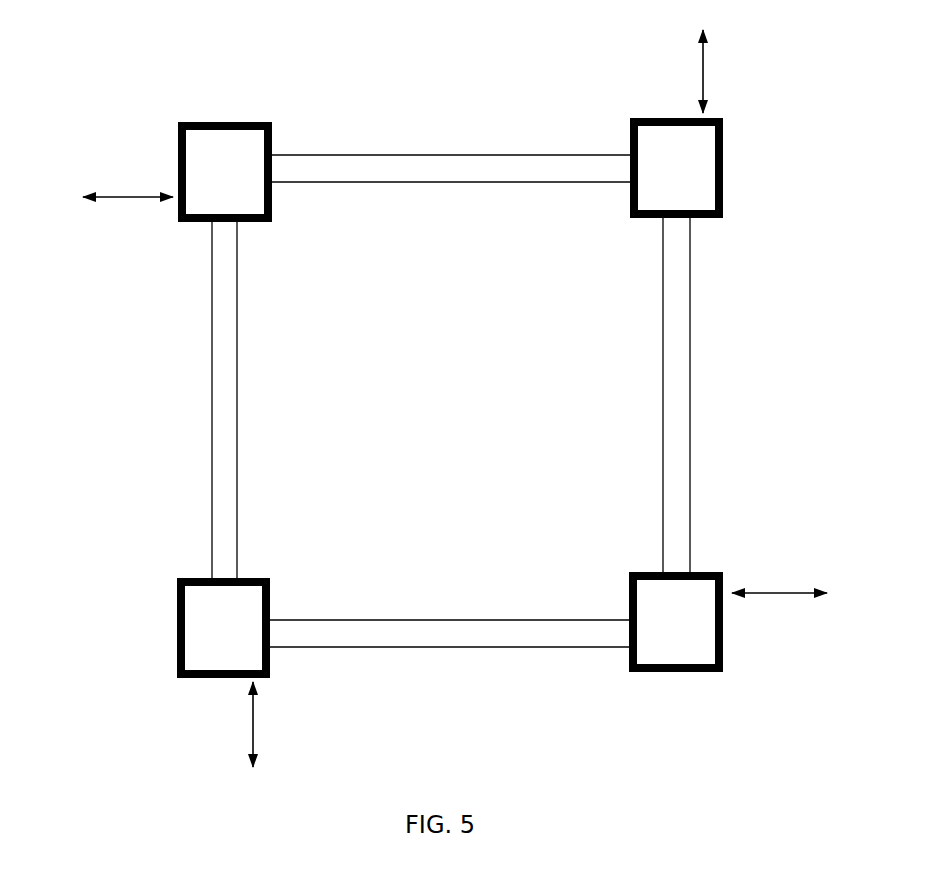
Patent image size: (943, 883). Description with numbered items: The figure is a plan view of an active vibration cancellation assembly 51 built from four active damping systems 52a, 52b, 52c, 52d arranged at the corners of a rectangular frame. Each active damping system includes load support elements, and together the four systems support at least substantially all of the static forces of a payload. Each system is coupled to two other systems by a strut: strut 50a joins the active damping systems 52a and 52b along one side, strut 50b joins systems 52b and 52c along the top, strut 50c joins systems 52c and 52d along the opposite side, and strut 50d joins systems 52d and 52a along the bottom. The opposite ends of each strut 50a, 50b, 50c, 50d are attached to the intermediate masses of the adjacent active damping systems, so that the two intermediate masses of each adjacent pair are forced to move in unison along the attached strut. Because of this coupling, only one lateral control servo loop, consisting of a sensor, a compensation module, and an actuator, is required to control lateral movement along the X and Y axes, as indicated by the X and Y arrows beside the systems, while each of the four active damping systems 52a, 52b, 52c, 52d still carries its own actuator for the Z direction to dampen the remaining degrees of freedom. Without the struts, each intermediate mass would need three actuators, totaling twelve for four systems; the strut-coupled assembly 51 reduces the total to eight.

The vibration cancellation assembly 51 is at (108, 382).
The active damping system 52a is at (177, 592).
The active damping system 52b is at (180, 177).
The active damping system 52c is at (723, 165).
The active damping system 52d is at (723, 607).
The strut 50a is at (237, 352).
The strut 50b is at (387, 182).
The strut 50c is at (663, 488).
The strut 50d is at (492, 620).